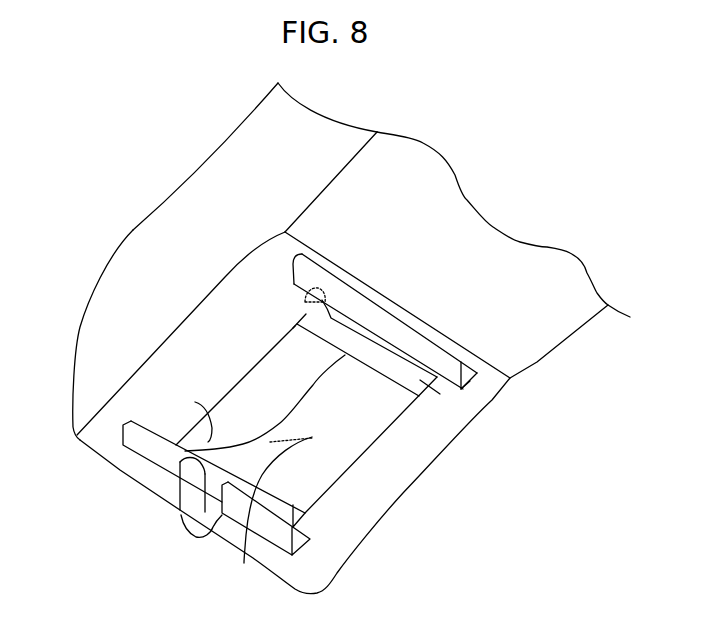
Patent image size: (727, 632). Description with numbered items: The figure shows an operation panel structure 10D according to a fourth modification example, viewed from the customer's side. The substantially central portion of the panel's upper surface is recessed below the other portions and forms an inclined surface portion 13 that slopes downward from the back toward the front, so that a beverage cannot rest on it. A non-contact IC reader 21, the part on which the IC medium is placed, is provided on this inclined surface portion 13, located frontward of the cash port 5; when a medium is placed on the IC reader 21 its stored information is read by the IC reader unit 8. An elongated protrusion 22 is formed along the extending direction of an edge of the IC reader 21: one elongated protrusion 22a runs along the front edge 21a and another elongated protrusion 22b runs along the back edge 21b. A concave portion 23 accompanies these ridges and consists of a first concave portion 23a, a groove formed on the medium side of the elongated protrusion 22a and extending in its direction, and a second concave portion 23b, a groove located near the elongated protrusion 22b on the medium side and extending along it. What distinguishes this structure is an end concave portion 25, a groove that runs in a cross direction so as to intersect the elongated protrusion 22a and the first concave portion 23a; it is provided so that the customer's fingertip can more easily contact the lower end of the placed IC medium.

The operation panel structure 10D is at (162, 278).
The cash port 5 is at (361, 208).
The inclined surface portion 13 is at (263, 288).
The non-contact IC reader 21 is at (299, 425).
The front edge 21a is at (210, 440).
The back edge 21b is at (330, 341).
The elongated protrusion 22 is at (409, 412).
The elongated protrusion 22a is at (320, 559).
The elongated protrusion 22b is at (480, 385).
The concave portion 23 is at (175, 479).
The first concave portion 23a is at (175, 477).
The second concave portion 23b is at (182, 495).
The end concave portion 25 is at (182, 514).
The IC reader unit 8 is at (238, 540).